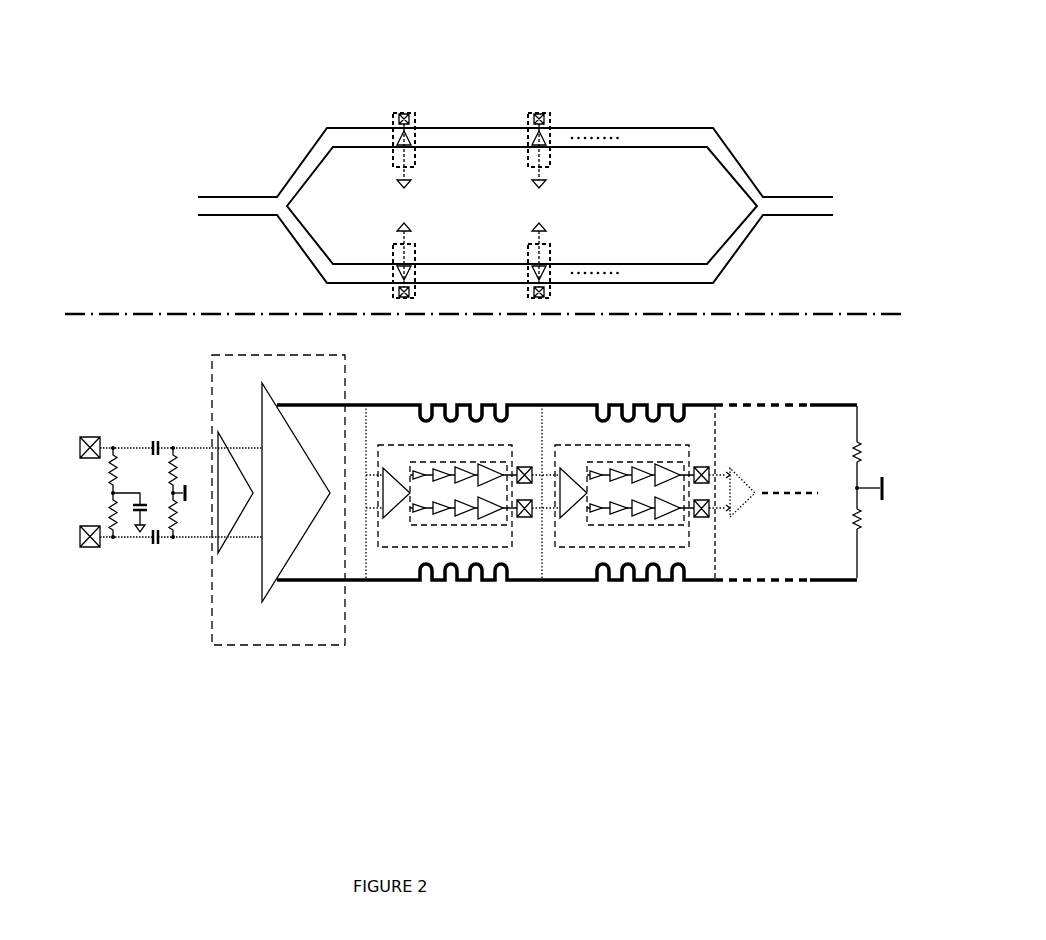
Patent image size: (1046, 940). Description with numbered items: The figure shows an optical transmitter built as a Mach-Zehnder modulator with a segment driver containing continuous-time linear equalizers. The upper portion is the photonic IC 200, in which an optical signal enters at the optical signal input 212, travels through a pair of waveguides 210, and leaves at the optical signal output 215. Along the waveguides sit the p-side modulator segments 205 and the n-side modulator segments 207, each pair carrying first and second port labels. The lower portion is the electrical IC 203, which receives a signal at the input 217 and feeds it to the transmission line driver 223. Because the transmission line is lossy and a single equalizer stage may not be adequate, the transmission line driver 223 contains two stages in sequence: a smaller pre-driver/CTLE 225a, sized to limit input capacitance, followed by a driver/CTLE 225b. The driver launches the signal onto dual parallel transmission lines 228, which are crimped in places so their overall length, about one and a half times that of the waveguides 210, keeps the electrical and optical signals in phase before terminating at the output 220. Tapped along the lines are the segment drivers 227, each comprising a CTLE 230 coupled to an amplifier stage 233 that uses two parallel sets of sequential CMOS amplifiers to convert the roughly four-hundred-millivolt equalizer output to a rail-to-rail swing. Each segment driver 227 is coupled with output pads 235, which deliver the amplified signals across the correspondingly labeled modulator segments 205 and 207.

The photonic IC 200 is at (511, 175).
The electrical IC 203 is at (464, 549).
The modulator segments 205 is at (528, 117).
The modulator segments 207 is at (527, 250).
The waveguides 210 is at (313, 233).
The optical signal input 212 is at (175, 203).
The optical signal output 215 is at (840, 203).
The input 217 is at (70, 502).
The output 220 is at (884, 490).
The transmission line driver 223 is at (244, 549).
The pre-driver/CTLE 225a is at (227, 500).
The driver/CTLE 225b is at (288, 508).
The segment drivers 227 is at (503, 550).
The transmission lines 228 is at (828, 407).
The CTLE 230 is at (392, 493).
The amplifier stage 233 is at (593, 520).
The output pads 235 is at (713, 467).